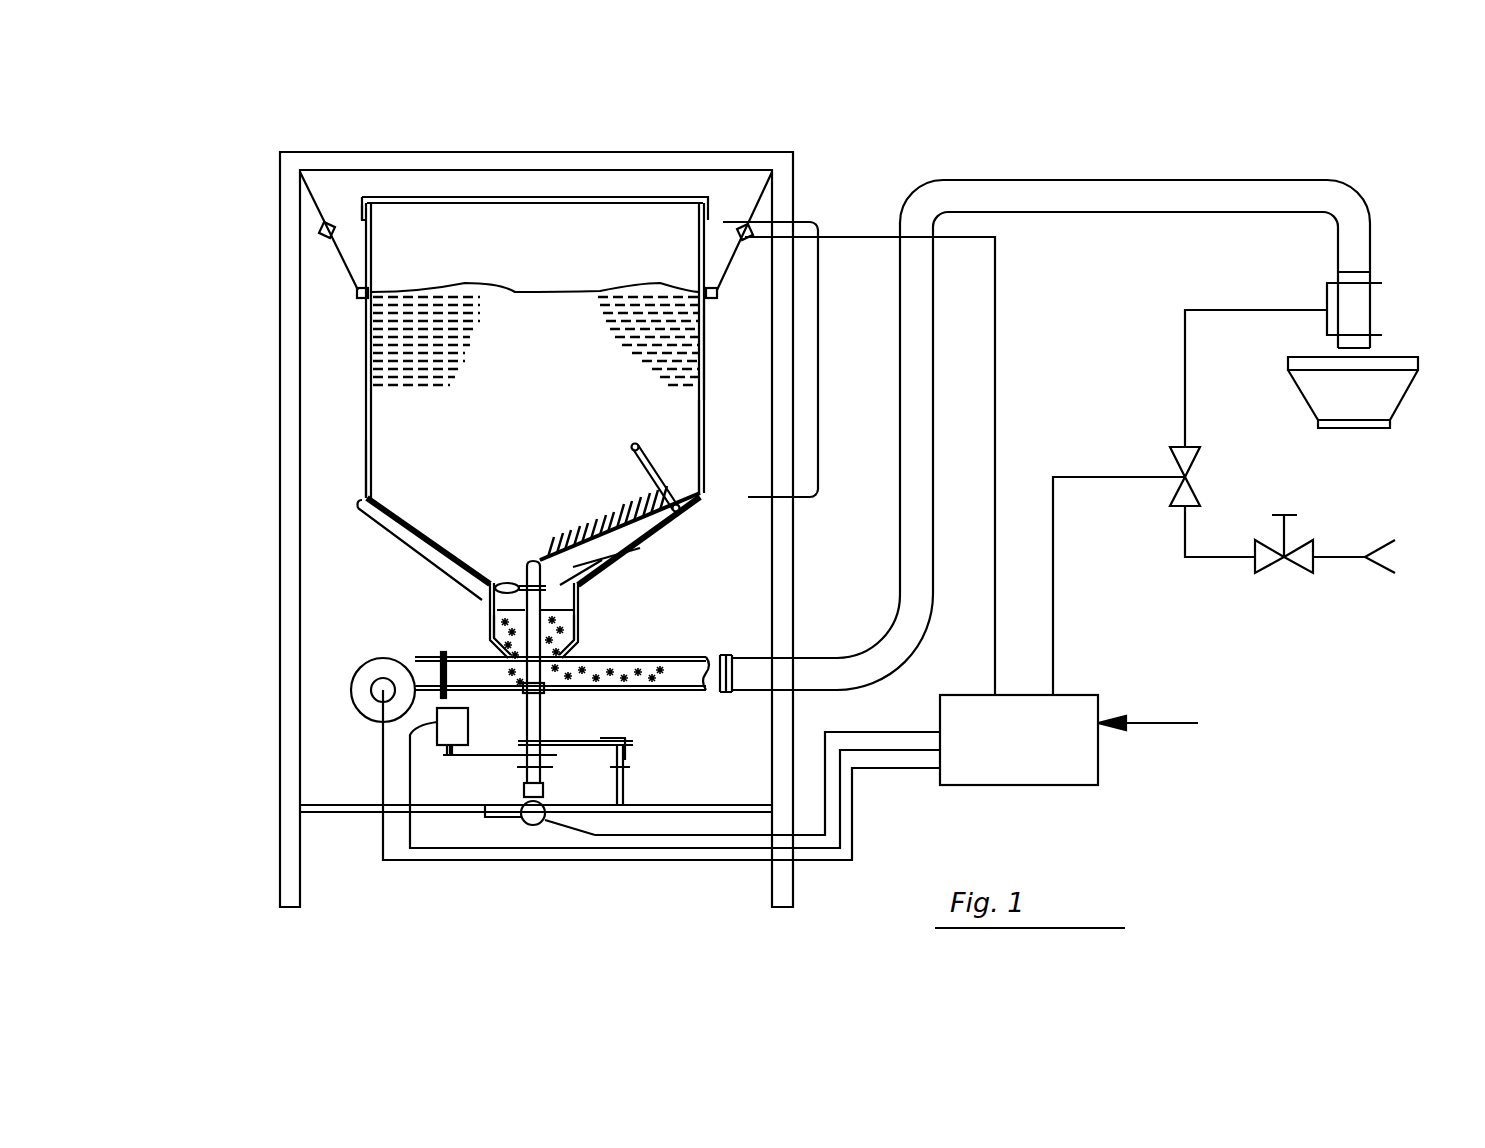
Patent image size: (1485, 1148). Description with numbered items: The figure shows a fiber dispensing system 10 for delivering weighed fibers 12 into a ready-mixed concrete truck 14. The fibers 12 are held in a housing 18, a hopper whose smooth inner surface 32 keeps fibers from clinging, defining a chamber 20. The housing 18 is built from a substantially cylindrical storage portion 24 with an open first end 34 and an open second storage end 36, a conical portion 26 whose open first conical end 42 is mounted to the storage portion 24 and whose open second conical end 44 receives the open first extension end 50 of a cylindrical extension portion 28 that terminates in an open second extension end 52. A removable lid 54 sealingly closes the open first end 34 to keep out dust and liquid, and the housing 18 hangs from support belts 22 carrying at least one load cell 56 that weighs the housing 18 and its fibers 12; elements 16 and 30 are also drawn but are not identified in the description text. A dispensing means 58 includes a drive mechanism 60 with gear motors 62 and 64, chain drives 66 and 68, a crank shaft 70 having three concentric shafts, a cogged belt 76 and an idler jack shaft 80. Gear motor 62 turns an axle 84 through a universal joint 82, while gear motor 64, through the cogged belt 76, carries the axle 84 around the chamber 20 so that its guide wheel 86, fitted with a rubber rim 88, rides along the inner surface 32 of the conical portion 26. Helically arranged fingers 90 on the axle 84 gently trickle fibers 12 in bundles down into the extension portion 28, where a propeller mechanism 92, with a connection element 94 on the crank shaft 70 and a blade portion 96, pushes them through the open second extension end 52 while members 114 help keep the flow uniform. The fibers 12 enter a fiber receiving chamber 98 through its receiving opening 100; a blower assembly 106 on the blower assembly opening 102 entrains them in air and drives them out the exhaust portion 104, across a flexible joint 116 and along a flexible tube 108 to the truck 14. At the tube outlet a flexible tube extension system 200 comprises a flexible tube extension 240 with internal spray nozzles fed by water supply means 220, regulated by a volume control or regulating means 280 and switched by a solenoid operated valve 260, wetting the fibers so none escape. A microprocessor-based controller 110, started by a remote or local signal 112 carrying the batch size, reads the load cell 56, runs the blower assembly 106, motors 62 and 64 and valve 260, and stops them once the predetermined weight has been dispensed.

The fiber dispensing system 10 is at (830, 162).
The fibers 12 is at (510, 290).
The ready-mixed concrete truck 14 is at (1305, 398).
The frame 16 is at (595, 152).
The housing 18 is at (705, 345).
The chamber 20 is at (395, 438).
The support belts 22 is at (305, 210).
The storage portion 24 is at (845, 356).
The conical portion 26 is at (415, 562).
The extension portion 28 is at (565, 627).
The hopper side wall 30 is at (705, 438).
The inner surface 32 is at (700, 398).
The open first end 34 is at (475, 215).
The open second storage end 36 is at (390, 480).
The open first conical end 42 is at (393, 497).
The open second conical end 44 is at (628, 553).
The open first extension end 50 is at (585, 565).
The open second extension end 52 is at (507, 662).
The removable lid 54 is at (362, 218).
The load cell 56 is at (320, 232).
The dispensing means 58 is at (543, 508).
The drive mechanism 60 is at (605, 743).
The gear motor 62 is at (490, 818).
The gear motor 64 is at (437, 722).
The chain drive 66 is at (640, 743).
The chain drive 68 is at (548, 768).
The crank shaft 70 is at (612, 640).
The cogged belt 76 is at (490, 757).
The idler jack shaft 80 is at (648, 767).
The universal joint 82 is at (518, 577).
The axle 84 is at (613, 508).
The guide wheel 86 is at (650, 467).
The rubber rim 88 is at (634, 444).
The fingers 90 is at (680, 515).
The propeller mechanism 92 is at (505, 573).
The connection element 94 is at (545, 545).
The blade portion 96 is at (500, 580).
The fiber receiving chamber 98 is at (513, 683).
The receiving opening 100 is at (548, 670).
The blower assembly opening 102 is at (425, 658).
The exhaust portion 104 is at (662, 688).
The blower assembly 106 is at (372, 660).
The flexible tube 108 is at (903, 642).
The microprocessor-based controller 110 is at (1030, 785).
The remote or local signal 112 is at (1158, 723).
The members 114 is at (495, 615).
The flexible joint 116 is at (732, 693).
The flexible tube extension system 200 is at (1322, 273).
The water supply means 220 is at (1185, 350).
The flexible tube extension 240 is at (1372, 305).
The solenoid operated valve 260 is at (1192, 494).
The volume control or regulating means 280 is at (1300, 565).